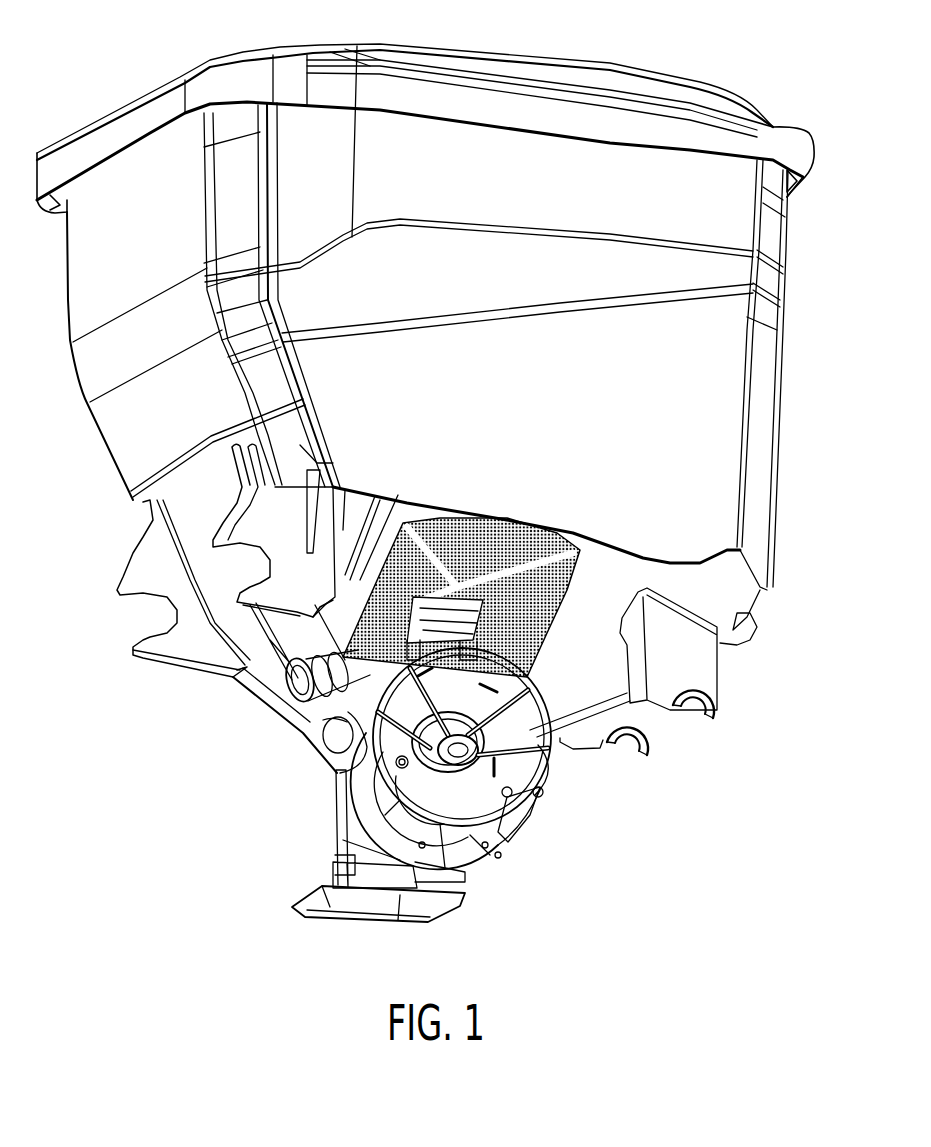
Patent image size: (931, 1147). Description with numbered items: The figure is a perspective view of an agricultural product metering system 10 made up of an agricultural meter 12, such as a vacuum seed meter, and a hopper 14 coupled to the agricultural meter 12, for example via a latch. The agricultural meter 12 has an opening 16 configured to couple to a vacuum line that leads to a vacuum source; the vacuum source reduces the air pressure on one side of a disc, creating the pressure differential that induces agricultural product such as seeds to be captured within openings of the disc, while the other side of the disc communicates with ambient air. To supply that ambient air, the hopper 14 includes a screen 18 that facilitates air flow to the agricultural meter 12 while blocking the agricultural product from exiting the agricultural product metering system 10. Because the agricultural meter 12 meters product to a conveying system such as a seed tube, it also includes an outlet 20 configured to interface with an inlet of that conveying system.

The agricultural product metering system 10 is at (97, 90).
The agricultural meter 12 is at (527, 777).
The hopper 14 is at (777, 387).
The opening 16 is at (285, 688).
The screen 18 is at (497, 530).
The outlet 20 is at (397, 920).